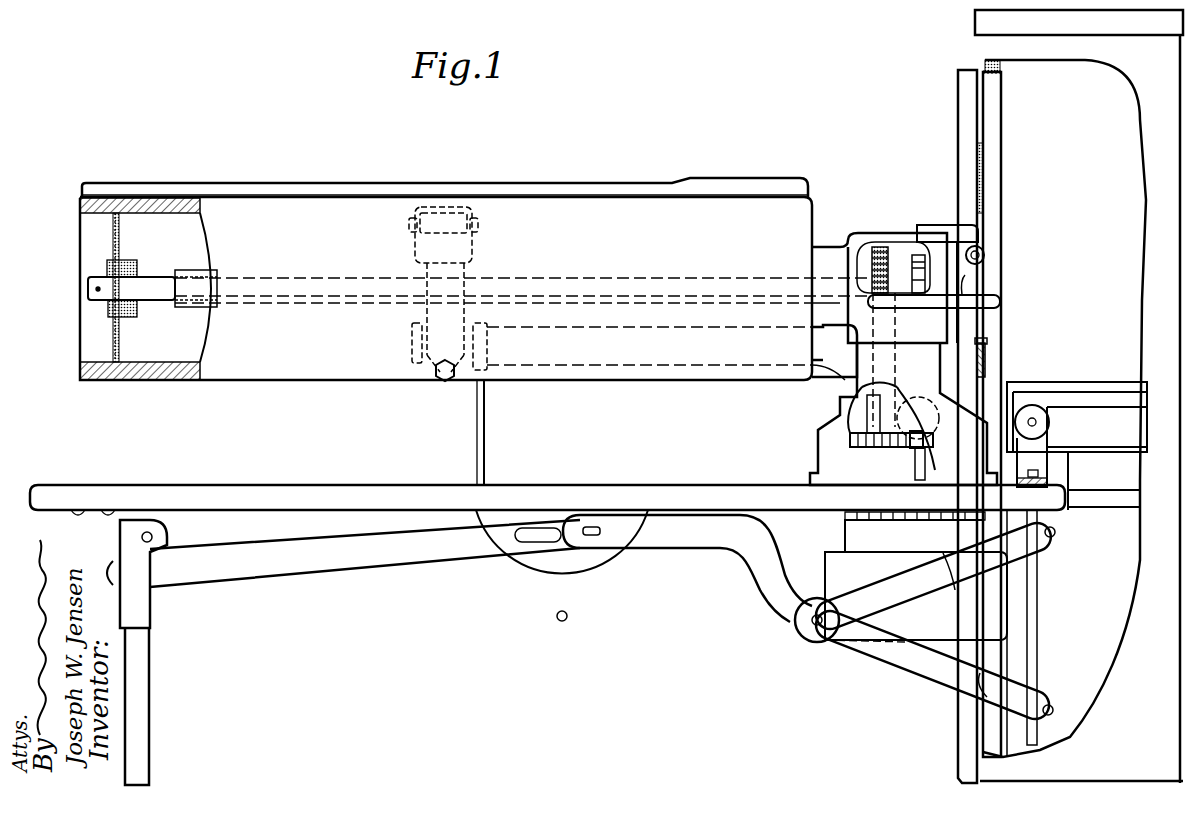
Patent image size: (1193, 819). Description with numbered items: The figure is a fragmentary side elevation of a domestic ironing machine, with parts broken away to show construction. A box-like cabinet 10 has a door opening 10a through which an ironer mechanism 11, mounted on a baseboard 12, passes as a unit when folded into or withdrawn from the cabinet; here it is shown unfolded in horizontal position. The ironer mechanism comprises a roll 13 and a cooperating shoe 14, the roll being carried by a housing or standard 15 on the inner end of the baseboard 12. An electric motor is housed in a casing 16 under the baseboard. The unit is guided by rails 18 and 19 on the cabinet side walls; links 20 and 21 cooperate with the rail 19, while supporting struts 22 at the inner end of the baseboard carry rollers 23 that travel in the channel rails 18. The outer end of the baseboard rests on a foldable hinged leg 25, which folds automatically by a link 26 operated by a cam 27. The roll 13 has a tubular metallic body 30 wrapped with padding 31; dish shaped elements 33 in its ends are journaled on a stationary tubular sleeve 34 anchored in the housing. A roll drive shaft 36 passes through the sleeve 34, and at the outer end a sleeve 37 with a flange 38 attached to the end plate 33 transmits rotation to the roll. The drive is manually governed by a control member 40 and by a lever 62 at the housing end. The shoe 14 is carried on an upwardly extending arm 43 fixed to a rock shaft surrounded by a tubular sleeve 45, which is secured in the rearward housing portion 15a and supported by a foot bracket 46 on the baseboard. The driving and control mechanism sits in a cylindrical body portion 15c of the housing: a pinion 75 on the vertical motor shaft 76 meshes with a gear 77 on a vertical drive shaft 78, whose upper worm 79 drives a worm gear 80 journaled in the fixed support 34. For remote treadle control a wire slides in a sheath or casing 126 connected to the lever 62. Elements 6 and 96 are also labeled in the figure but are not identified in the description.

The fastening screw 6 is at (980, 152).
The cabinet 10 is at (1020, 92).
The door opening 10a is at (990, 125).
The ironer mechanism 11 is at (358, 342).
The baseboard 12 is at (322, 493).
The roll 13 is at (277, 365).
The shoe 14 is at (738, 190).
The housing or standard 15 is at (838, 407).
The rearward portion of the housing 15a is at (840, 365).
The cylindrical body portion of the housing 15c is at (866, 233).
The motor casing 16 is at (850, 555).
The channel rails 18 is at (1115, 413).
The rail 19 is at (1048, 588).
The link 20 is at (915, 668).
The link 21 is at (922, 585).
The supporting strut 22 is at (1035, 465).
The roller 23 is at (1042, 410).
The foldable hinged leg 25 is at (140, 668).
The link 26 is at (318, 560).
The cam 27 is at (510, 593).
The tubular metallic supporting body 30 is at (138, 362).
The padding 31 is at (152, 382).
The dish shaped element 33 is at (117, 340).
The stationary tubular sleeve 34 is at (185, 277).
The roll drive shaft 36 is at (160, 292).
The sleeve 37 is at (100, 278).
The flange 38 is at (108, 310).
The control member 40 is at (976, 234).
The upwardly extending arm 43 is at (417, 322).
The tubular sleeve 45 is at (810, 372).
The foot bracket 46 is at (485, 413).
The manually operating lever 62 is at (998, 305).
The pinion 75 is at (930, 440).
The motor shaft 76 is at (922, 464).
The gear 77 is at (847, 438).
The drive shaft 78 is at (860, 392).
The worm 79 is at (893, 262).
The worm gear 80 is at (880, 248).
The slide 96 is at (918, 258).
The sheath or casing 126 is at (985, 347).